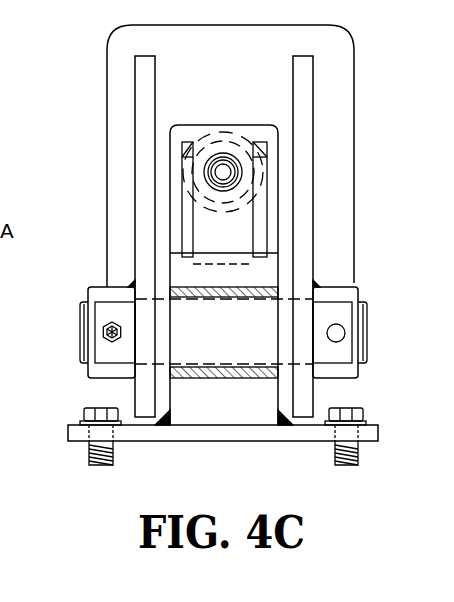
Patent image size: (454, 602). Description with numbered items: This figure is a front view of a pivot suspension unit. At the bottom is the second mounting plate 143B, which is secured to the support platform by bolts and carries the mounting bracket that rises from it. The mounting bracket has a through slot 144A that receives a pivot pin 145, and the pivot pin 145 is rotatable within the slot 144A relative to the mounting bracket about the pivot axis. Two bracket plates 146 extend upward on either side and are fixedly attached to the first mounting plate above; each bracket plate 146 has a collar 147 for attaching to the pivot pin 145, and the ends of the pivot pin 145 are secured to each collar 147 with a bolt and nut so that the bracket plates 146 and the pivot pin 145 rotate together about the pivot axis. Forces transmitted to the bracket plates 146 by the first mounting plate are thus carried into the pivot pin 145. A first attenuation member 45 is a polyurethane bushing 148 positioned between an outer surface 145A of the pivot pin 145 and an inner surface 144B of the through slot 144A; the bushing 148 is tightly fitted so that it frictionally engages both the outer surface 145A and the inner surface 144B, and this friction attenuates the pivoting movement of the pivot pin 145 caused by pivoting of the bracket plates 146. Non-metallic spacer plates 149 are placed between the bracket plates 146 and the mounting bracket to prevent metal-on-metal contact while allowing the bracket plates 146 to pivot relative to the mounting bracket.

The bracket plates 146 is at (313, 95).
The inner surface of the through slot 144B is at (197, 285).
The through slot 144A is at (243, 285).
The polyurethane bushing 148 is at (306, 273).
The attenuation member 45 is at (276, 284).
The outer surface of the pivot pin 145A is at (190, 378).
The collar 147 is at (103, 287).
The pivot pin 145 is at (80, 332).
The spacer plates 149 is at (285, 395).
The second mounting plate 143B is at (272, 441).